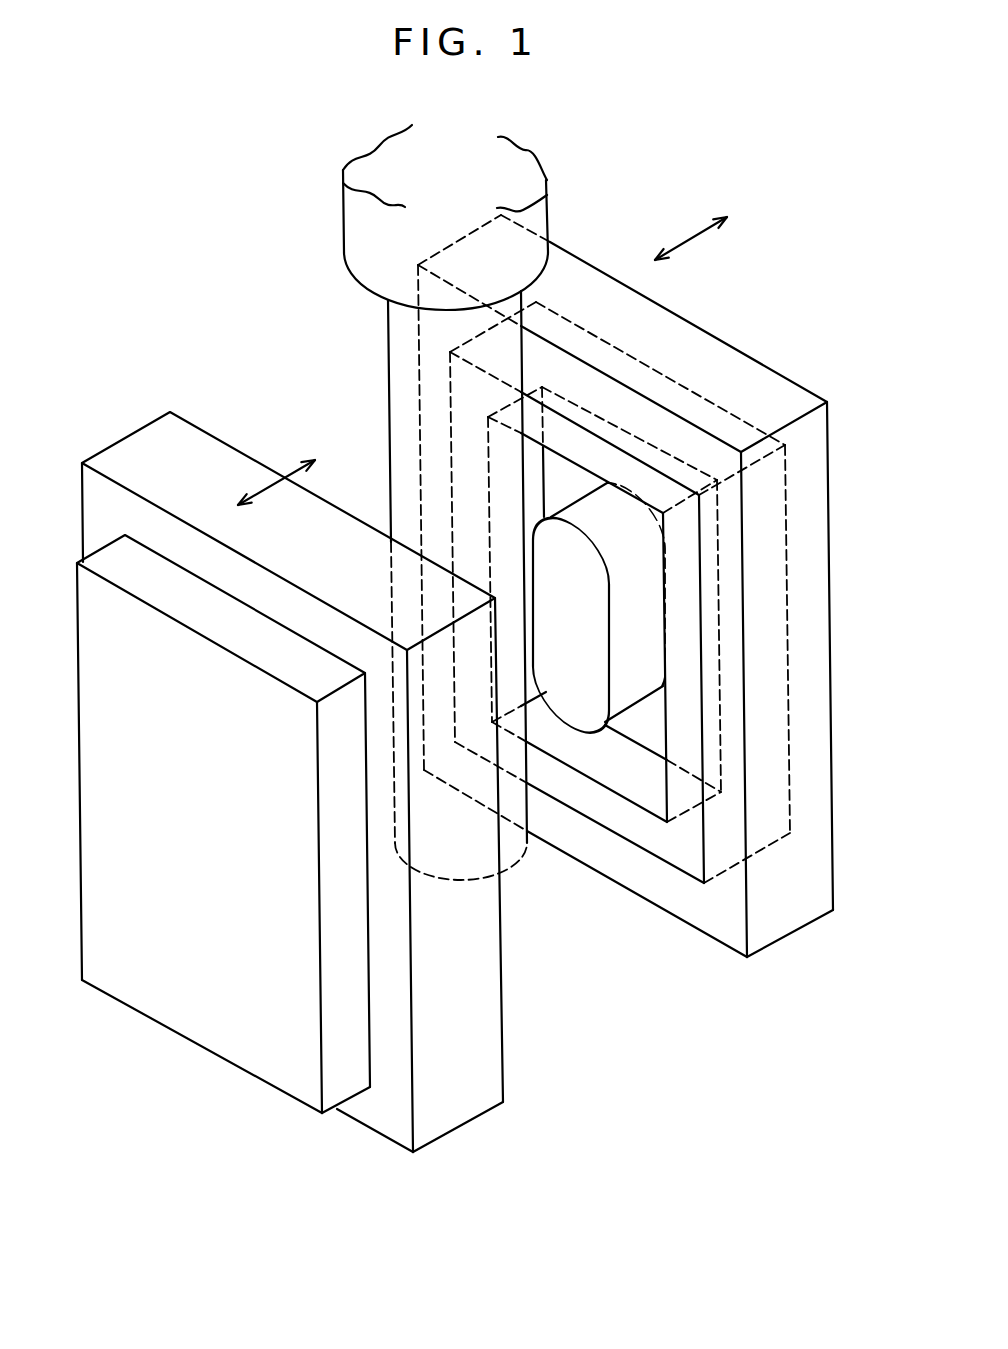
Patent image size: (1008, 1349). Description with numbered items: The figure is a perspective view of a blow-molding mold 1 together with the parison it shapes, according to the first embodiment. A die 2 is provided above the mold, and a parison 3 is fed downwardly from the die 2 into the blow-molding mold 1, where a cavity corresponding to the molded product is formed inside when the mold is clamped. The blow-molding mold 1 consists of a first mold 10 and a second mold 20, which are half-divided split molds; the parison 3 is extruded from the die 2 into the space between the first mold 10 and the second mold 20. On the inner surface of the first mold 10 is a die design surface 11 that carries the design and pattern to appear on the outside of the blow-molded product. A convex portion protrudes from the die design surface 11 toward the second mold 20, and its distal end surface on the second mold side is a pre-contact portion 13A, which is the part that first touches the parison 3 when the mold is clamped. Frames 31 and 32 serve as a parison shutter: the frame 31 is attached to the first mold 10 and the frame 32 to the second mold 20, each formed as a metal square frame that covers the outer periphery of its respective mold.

The blow-molding mold 1 is at (697, 122).
The die 2 is at (545, 223).
The parison 3 is at (396, 365).
The first mold 10 is at (762, 853).
The die design surface 11 is at (627, 767).
The pre-contact portion 13A is at (577, 700).
The second mold 20 is at (155, 995).
The frame 31 is at (778, 393).
The frame 32 is at (137, 455).